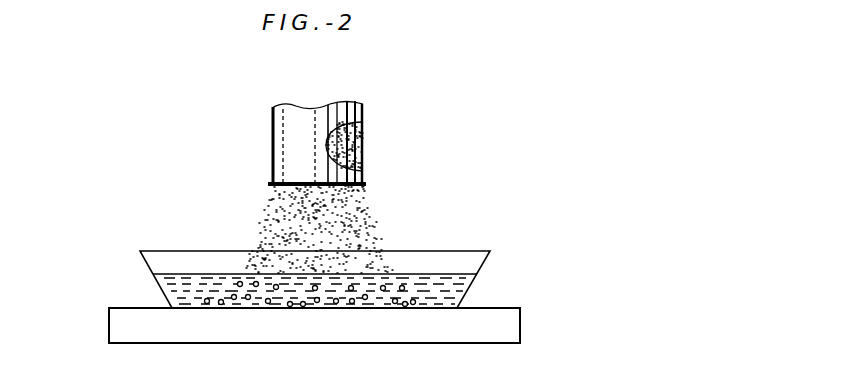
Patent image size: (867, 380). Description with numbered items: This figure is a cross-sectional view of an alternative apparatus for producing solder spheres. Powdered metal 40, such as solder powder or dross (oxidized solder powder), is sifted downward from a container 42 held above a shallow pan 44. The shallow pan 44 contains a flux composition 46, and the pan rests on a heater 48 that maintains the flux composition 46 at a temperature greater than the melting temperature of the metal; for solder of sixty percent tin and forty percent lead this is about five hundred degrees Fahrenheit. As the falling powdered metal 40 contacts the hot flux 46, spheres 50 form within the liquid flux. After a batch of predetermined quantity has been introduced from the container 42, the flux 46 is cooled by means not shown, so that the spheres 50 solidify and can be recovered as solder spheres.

The powdered metal 40 is at (362, 156).
The container 42 is at (266, 157).
The shallow pan 44 is at (151, 273).
The flux composition 46 is at (466, 293).
The heater 48 is at (116, 327).
The spheres 50 is at (221, 299).